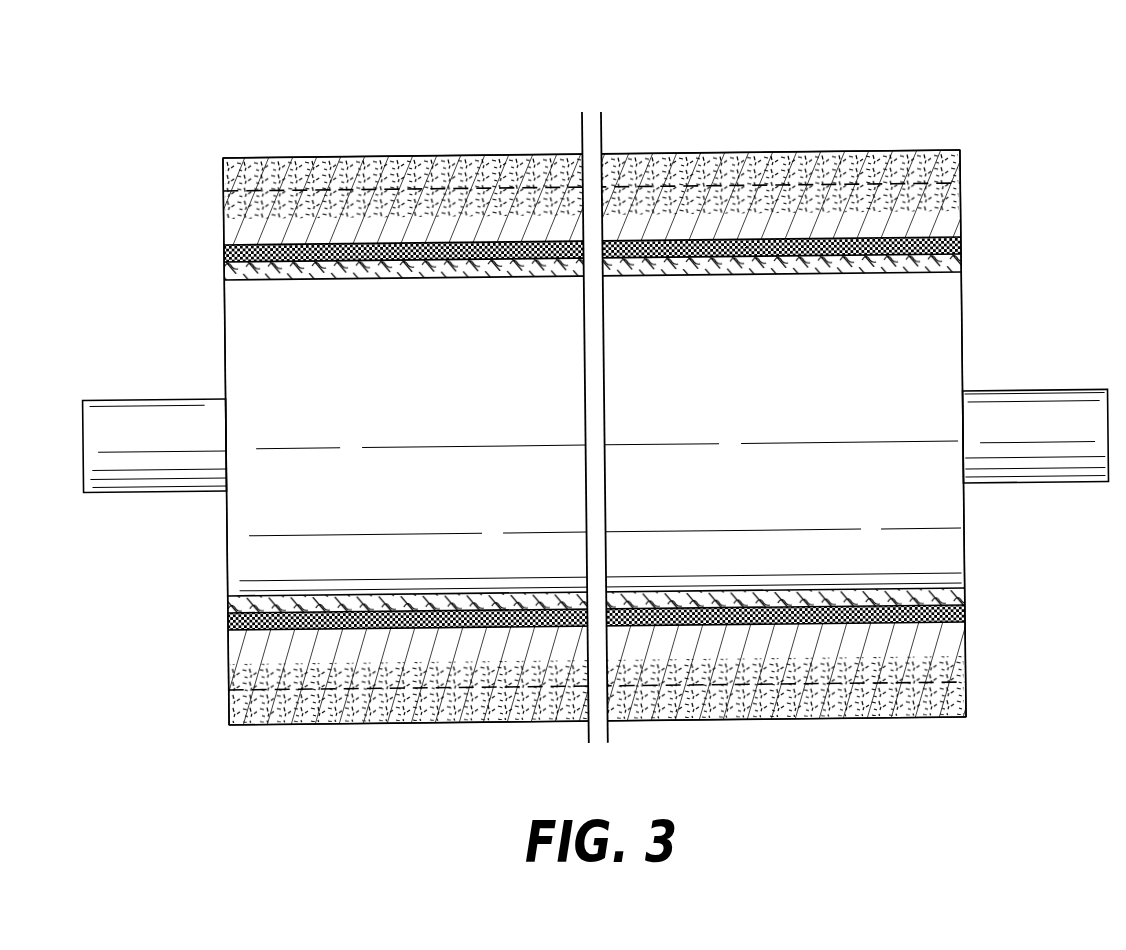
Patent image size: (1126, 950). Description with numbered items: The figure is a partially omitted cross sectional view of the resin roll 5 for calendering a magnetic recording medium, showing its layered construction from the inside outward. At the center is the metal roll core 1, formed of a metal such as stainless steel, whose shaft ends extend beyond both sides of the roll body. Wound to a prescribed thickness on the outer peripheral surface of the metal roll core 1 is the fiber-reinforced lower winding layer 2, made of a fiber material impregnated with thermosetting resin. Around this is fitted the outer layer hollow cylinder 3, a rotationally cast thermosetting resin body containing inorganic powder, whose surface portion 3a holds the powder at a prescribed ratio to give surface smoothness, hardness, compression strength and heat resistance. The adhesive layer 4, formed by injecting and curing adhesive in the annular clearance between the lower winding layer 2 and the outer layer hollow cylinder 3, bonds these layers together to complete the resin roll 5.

The metal roll core 1 is at (940, 364).
The fiber-reinforced lower winding layer 2 is at (922, 274).
The outer layer hollow cylinder 3 is at (893, 152).
The surface portion 3a is at (677, 162).
The adhesive layer 4 is at (949, 237).
The resin roll 5 is at (791, 104).